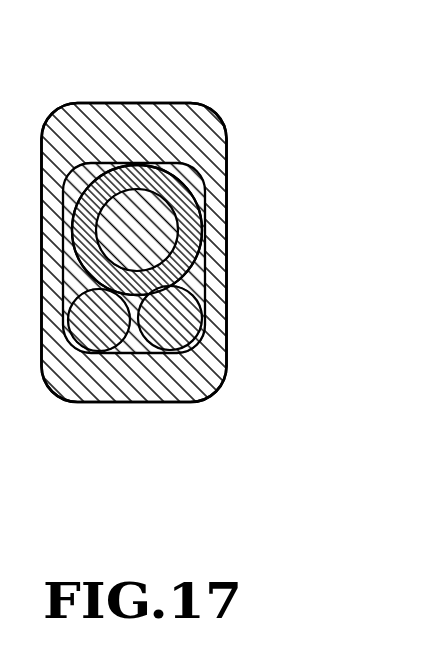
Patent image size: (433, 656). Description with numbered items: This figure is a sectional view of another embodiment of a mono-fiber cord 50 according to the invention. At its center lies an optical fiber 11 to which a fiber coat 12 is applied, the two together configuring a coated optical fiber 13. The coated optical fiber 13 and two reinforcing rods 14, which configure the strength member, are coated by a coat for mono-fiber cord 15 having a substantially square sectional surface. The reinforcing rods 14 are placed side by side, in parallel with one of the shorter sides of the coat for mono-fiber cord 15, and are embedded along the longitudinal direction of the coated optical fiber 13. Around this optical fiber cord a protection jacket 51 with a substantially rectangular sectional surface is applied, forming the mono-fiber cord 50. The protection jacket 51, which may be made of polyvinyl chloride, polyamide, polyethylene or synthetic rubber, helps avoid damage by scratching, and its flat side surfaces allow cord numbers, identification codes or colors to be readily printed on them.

The mono-fiber cord 50 is at (189, 81).
The protection jacket 51 is at (135, 378).
The coat for mono-fiber cord 15 is at (192, 282).
The coated optical fiber 13 is at (317, 148).
The fiber coat 12 is at (190, 233).
The optical fiber 11 is at (147, 203).
The reinforcing rods 14 is at (98, 333).